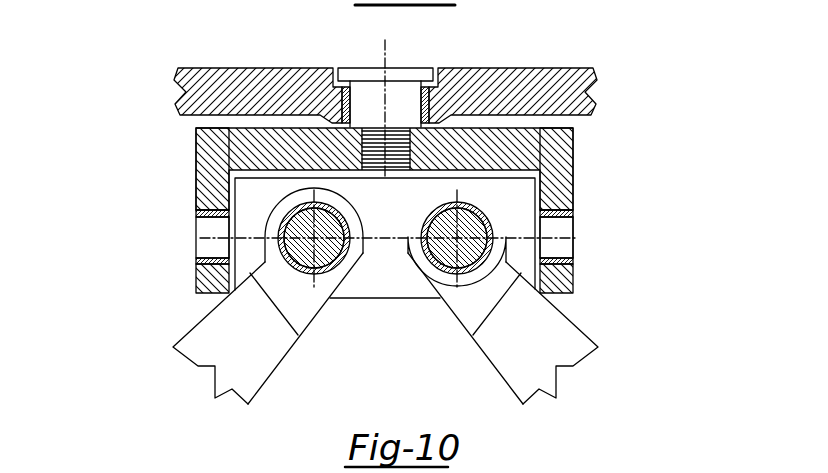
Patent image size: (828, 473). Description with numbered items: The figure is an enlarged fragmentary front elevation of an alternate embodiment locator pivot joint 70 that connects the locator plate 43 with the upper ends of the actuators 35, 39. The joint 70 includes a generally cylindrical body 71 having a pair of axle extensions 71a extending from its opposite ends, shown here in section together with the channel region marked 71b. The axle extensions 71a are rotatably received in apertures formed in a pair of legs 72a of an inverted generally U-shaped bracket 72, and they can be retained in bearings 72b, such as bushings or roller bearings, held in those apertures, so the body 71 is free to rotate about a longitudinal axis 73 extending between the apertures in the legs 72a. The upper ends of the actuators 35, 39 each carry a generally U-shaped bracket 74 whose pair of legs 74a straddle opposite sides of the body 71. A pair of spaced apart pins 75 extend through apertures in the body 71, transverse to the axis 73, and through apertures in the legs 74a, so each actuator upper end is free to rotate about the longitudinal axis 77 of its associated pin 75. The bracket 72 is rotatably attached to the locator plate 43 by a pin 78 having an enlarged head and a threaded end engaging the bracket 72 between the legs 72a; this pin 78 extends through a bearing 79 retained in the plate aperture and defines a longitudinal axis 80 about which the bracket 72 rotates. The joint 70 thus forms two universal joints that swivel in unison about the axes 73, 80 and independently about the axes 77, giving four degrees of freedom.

The actuator 35 is at (246, 364).
The actuator 39 is at (552, 351).
The locator plate 43 is at (563, 72).
The locator pivot joint 70 is at (382, 269).
The body 71 is at (398, 285).
The axle extension 71a is at (567, 247).
The body channel 71b is at (207, 247).
The bracket 72 is at (575, 132).
The leg 72a is at (202, 183).
The bearing 72b is at (198, 212).
The longitudinal axis 73 is at (593, 237).
The bracket 74 is at (493, 307).
The leg 74a is at (293, 288).
The pin 75 is at (433, 207).
The longitudinal axis 77 is at (441, 297).
The pin 78 is at (362, 72).
The bearing 79 is at (445, 100).
The longitudinal axis 80 is at (382, 56).